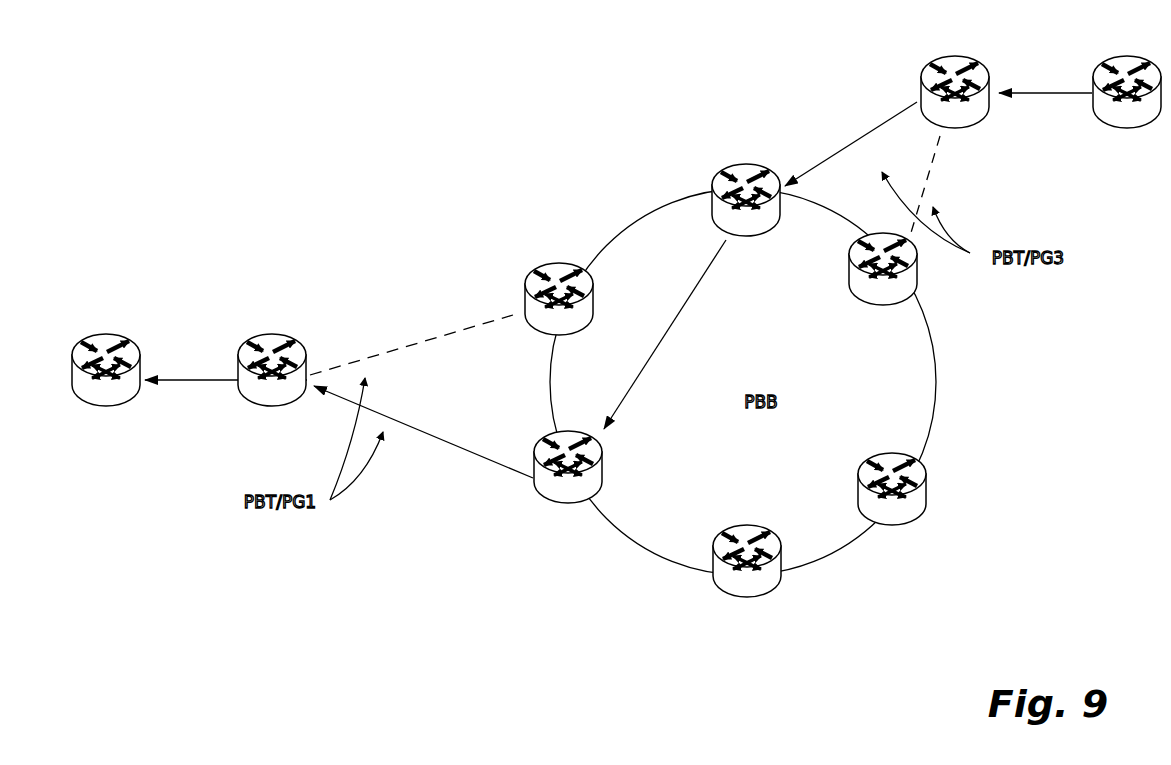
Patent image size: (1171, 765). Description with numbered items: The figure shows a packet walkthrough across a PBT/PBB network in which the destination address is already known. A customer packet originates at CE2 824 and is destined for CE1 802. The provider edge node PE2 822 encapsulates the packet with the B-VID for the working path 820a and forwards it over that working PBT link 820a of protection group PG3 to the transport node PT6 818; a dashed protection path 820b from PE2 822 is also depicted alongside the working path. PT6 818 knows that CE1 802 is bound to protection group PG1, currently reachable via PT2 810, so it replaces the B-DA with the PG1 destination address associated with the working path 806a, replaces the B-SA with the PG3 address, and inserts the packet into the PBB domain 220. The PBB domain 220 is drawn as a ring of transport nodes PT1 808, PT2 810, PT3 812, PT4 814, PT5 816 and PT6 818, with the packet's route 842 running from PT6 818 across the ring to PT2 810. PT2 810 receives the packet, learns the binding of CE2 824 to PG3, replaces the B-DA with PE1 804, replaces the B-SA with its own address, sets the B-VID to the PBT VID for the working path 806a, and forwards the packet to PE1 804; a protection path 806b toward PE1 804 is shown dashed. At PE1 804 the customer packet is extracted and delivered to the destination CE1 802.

The CE1 802 is at (103, 333).
The PE1 804 is at (255, 333).
The working path 806a is at (423, 440).
The protection path 806b is at (411, 330).
The provider transport node PT1 808 is at (535, 266).
The PT2 810 is at (543, 435).
The provider transport node PT3 812 is at (712, 572).
The provider transport node PT4 814 is at (926, 482).
The provider transport node PT5 816 is at (878, 233).
The PT6 818 is at (715, 178).
The working PBT link 820a is at (851, 144).
The protection path from PE2 820b is at (943, 186).
The PE2 822 is at (926, 60).
The CE2 824 is at (1094, 60).
The transport path PT6 to PT2 842 is at (665, 334).
The PBB sub-network 220 is at (937, 380).